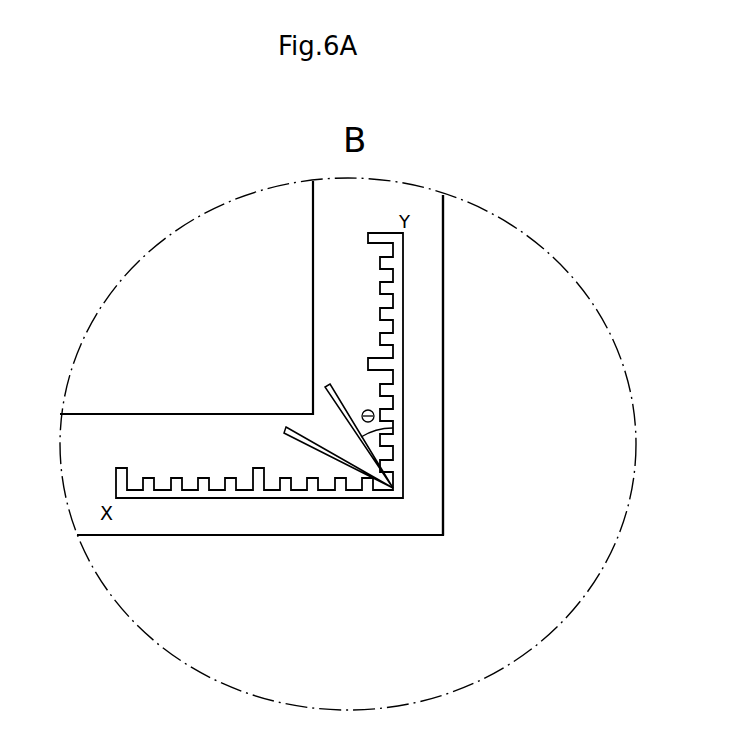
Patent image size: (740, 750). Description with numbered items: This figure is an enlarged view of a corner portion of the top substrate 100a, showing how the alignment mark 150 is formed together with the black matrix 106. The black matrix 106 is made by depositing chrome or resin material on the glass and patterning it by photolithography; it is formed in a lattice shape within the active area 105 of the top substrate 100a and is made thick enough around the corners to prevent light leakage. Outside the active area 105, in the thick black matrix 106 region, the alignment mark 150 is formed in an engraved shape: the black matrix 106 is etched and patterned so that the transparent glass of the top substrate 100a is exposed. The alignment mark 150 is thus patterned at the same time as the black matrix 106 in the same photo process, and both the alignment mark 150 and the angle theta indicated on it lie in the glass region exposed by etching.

The active area 105 is at (272, 247).
The black matrix 106 is at (432, 200).
The top substrate 100a is at (443, 351).
The alignment mark 150 is at (405, 412).